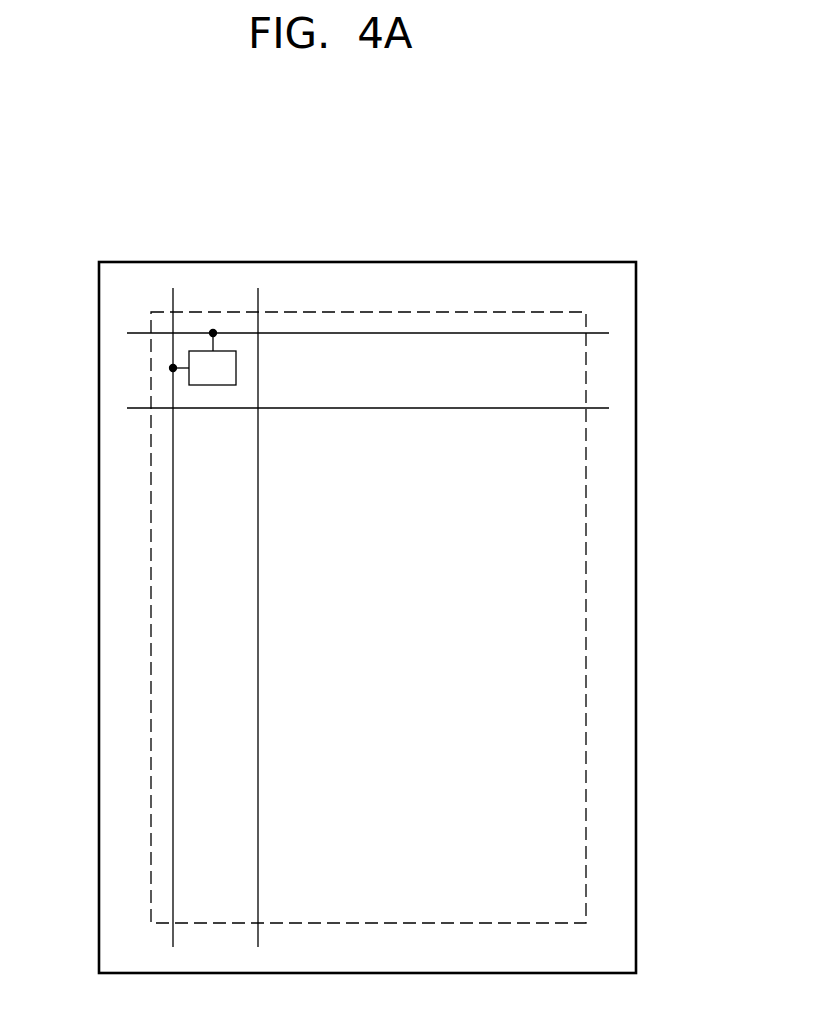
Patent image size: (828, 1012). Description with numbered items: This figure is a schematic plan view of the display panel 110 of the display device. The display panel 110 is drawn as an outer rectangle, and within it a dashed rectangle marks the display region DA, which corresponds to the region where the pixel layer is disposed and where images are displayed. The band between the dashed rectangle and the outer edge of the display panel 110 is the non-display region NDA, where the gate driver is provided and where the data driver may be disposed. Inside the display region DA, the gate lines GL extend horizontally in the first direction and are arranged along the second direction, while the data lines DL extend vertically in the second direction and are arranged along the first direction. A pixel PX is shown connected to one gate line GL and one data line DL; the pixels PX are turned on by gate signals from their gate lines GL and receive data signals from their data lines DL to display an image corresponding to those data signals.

The display panel 110 is at (536, 192).
The display region DA is at (586, 376).
The non-display region NDA is at (623, 467).
The data line DL is at (173, 299).
The gate line GL is at (132, 333).
The pixel PX is at (203, 358).